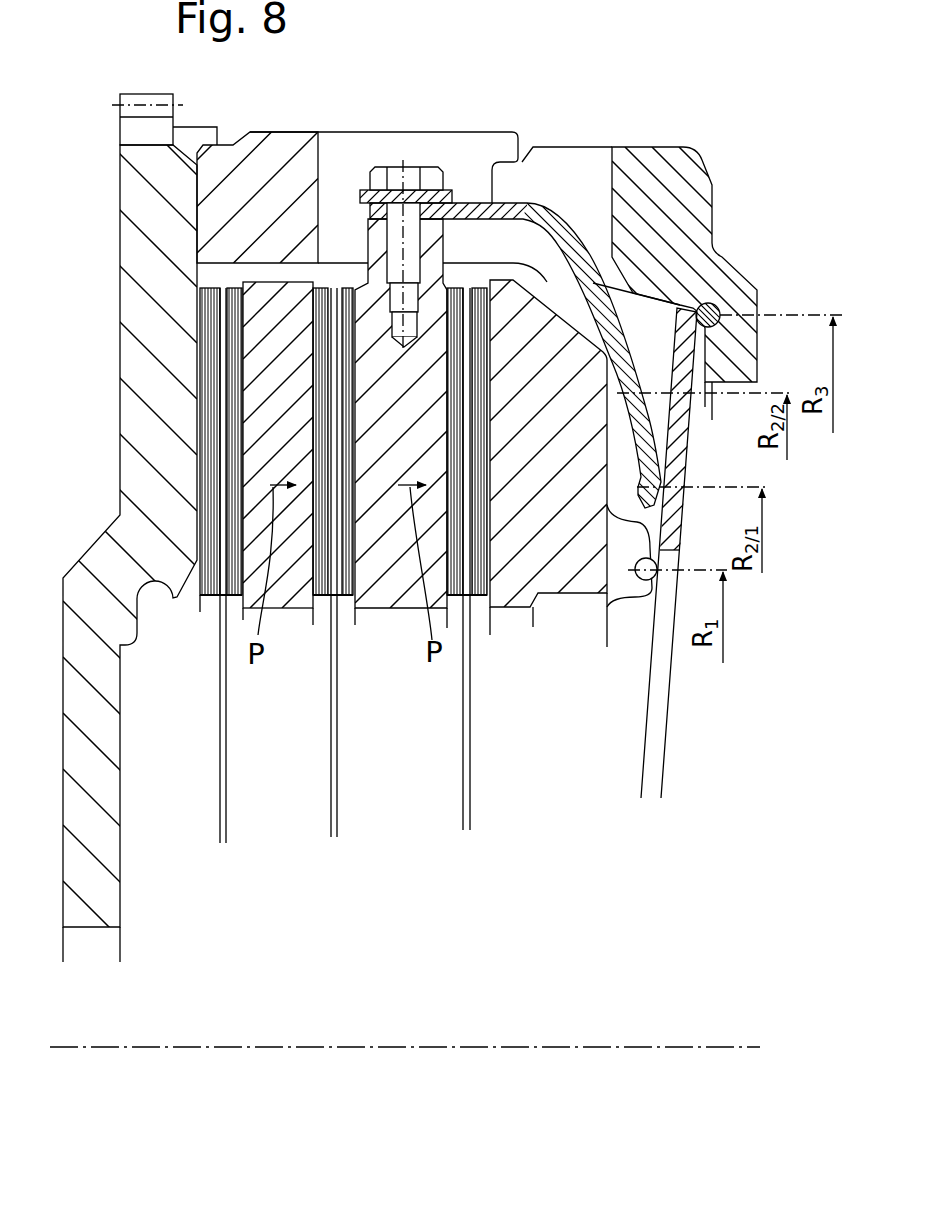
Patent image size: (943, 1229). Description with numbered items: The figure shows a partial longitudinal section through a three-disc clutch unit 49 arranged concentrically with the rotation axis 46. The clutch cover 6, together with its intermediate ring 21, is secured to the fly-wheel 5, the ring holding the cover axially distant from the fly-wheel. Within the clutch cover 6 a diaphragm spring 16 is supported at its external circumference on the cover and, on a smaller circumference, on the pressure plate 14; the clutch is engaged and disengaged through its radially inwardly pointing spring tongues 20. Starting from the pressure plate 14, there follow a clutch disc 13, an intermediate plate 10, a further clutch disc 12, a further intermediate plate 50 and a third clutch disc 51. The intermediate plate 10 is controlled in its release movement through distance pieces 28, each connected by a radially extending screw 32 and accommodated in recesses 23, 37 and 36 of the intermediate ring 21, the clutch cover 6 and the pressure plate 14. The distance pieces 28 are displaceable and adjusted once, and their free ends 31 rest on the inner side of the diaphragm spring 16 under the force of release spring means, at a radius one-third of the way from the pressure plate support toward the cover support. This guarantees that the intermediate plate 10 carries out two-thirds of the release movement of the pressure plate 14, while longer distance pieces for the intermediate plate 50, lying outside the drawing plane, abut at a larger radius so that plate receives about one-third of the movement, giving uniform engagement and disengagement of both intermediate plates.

The fly-wheel 5 is at (143, 246).
The clutch cover 6 is at (682, 223).
The intermediate plate 10 is at (383, 580).
The clutch disc 12 is at (335, 765).
The clutch disc 13 is at (468, 770).
The pressure plate 14 is at (555, 562).
The diaphragm spring 16 is at (648, 435).
The spring tongues 20 is at (655, 768).
The intermediate ring 21 is at (283, 175).
The recess 23 is at (438, 149).
The distance piece 28 is at (577, 258).
The free end 31 is at (680, 507).
The screw 32 is at (395, 173).
The recess 36 is at (552, 290).
The recess 37 is at (550, 167).
The rotation axis 46 is at (720, 1047).
The clutch unit 49 is at (690, 91).
The intermediate plate 50 is at (297, 592).
The clutch disc 51 is at (222, 700).